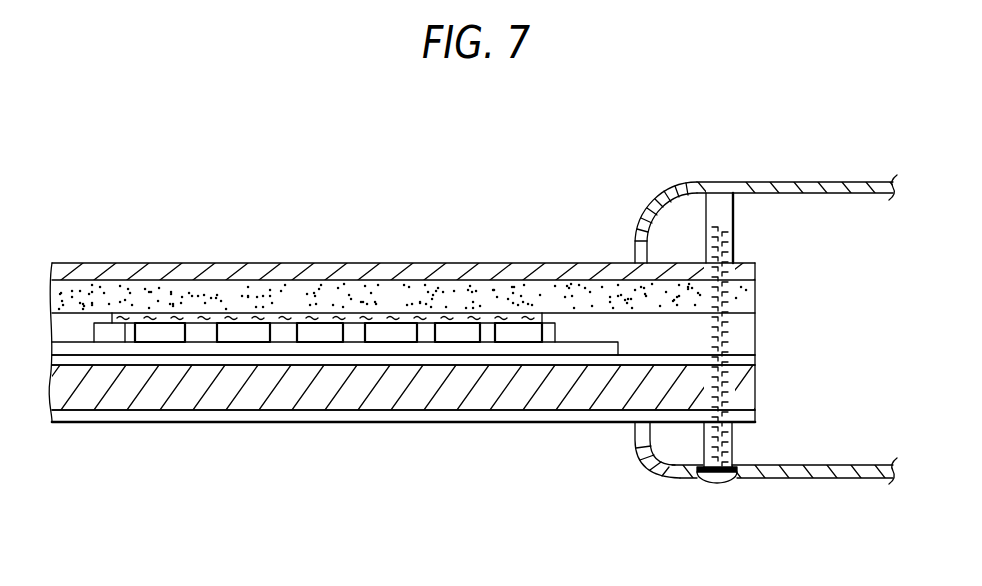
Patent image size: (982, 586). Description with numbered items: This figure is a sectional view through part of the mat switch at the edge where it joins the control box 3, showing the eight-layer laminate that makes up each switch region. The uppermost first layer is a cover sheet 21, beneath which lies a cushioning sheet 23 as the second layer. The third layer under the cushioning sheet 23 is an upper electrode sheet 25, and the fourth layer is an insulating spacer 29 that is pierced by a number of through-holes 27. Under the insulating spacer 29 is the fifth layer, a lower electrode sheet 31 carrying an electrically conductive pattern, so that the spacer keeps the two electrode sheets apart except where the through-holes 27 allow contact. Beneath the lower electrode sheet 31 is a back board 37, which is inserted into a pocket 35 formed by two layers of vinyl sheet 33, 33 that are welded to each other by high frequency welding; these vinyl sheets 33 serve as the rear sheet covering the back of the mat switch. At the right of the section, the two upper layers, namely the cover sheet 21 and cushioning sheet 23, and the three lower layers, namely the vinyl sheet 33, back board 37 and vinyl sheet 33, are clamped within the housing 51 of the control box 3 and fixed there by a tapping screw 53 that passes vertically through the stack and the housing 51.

The control box 3 is at (772, 308).
The cover sheet 21 is at (272, 268).
The cushioning sheet 23 is at (97, 290).
The upper electrode sheet 25 is at (126, 318).
The through-holes 27 is at (228, 335).
The insulating spacer 29 is at (355, 335).
The lower electrode sheet 31 is at (510, 350).
The vinyl sheet 33 is at (440, 358).
The pocket 35 is at (308, 408).
The back board 37 is at (250, 398).
The housing 51 is at (756, 182).
The tapping screw 53 is at (738, 493).